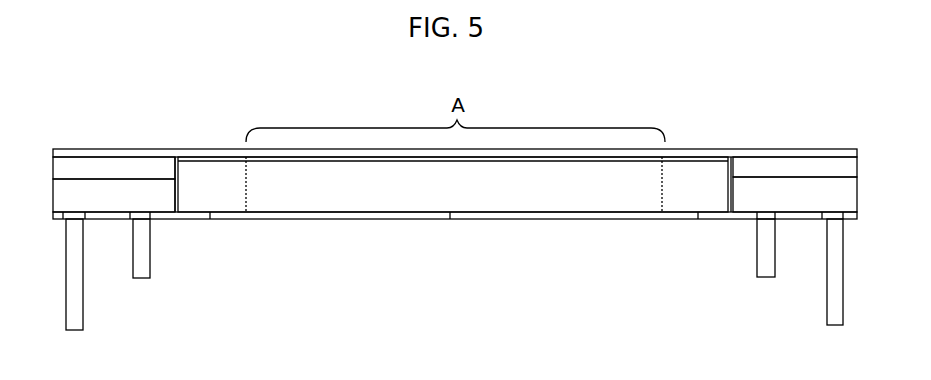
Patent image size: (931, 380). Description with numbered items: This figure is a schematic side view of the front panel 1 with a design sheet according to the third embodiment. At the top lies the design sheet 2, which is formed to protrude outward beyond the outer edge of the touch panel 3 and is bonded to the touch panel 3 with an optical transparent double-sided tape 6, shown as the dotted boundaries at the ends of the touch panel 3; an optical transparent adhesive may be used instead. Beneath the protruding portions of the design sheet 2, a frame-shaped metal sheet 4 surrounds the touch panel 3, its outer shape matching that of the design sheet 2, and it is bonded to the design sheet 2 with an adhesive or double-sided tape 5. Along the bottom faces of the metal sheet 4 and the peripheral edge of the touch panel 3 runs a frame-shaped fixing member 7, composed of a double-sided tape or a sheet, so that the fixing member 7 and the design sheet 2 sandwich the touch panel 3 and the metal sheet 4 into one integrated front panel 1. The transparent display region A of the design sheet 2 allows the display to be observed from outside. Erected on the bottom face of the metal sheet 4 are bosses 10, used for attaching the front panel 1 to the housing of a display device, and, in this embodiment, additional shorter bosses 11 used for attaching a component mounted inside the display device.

The front panel with a design sheet 1 is at (550, 141).
The design sheet 2 is at (287, 150).
The touch panel 3 is at (462, 197).
The metal sheet 4 is at (83, 190).
The double-sided tape 5 is at (132, 163).
The optical transparent double-sided tape 6 is at (672, 155).
The fixing member 7 is at (192, 222).
The boss 10 is at (78, 315).
The boss for attaching a component 11 is at (147, 268).